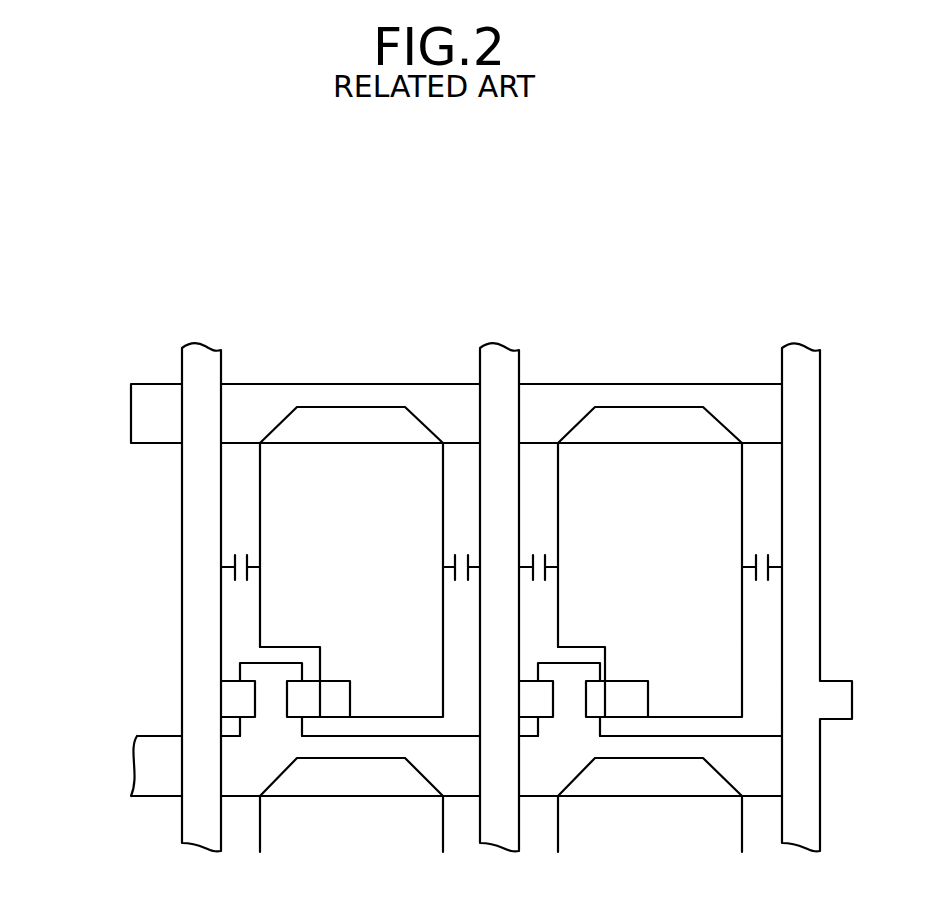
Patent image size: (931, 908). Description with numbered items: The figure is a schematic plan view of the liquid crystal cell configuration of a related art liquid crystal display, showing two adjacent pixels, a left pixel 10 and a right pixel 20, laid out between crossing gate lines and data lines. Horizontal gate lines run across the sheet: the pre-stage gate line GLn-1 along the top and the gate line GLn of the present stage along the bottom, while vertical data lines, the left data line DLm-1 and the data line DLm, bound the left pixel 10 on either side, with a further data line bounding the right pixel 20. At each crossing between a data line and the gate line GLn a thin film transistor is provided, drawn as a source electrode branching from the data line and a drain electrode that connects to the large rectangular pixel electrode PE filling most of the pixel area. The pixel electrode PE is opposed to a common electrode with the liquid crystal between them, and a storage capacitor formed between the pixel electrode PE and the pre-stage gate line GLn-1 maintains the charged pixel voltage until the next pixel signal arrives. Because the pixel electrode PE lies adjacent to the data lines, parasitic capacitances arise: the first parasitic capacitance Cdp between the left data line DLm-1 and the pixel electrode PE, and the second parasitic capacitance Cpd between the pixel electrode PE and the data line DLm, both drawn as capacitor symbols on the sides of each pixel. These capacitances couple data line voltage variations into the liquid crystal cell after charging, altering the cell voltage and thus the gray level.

The left pixel 10 is at (346, 364).
The right pixel 20 is at (654, 364).
The pixel electrode PE is at (501, 580).
The first parasitic capacitance Cdp is at (235, 578).
The second parasitic capacitance Cpd is at (455, 578).
The pre-stage gate line GLn-1 is at (397, 413).
The gate line GLn is at (414, 766).
The left data line DLm-1 is at (208, 573).
The data line DLm is at (498, 573).